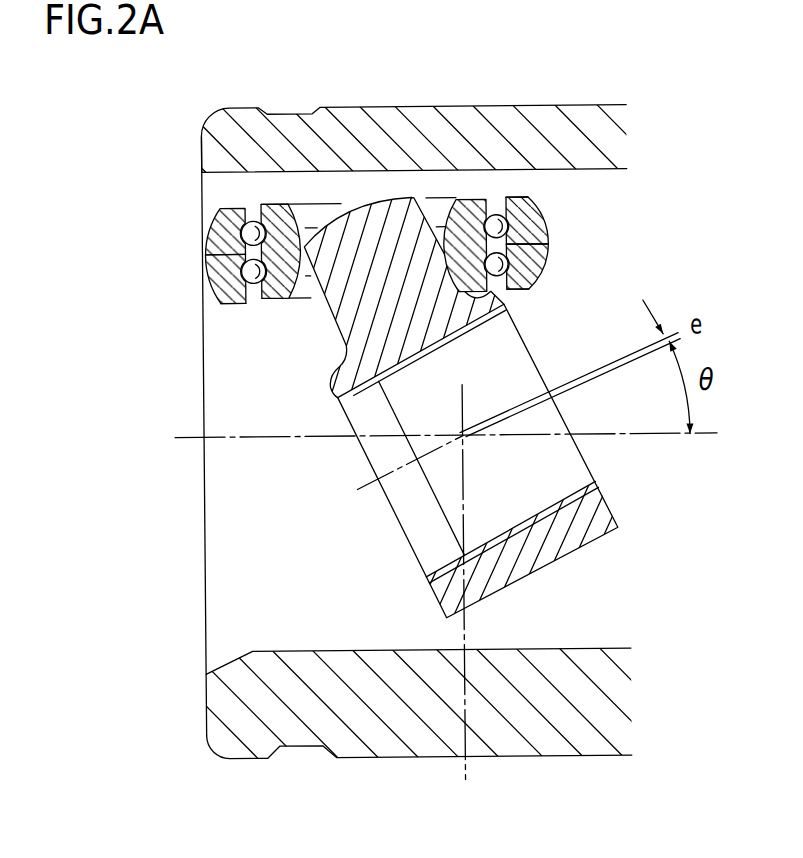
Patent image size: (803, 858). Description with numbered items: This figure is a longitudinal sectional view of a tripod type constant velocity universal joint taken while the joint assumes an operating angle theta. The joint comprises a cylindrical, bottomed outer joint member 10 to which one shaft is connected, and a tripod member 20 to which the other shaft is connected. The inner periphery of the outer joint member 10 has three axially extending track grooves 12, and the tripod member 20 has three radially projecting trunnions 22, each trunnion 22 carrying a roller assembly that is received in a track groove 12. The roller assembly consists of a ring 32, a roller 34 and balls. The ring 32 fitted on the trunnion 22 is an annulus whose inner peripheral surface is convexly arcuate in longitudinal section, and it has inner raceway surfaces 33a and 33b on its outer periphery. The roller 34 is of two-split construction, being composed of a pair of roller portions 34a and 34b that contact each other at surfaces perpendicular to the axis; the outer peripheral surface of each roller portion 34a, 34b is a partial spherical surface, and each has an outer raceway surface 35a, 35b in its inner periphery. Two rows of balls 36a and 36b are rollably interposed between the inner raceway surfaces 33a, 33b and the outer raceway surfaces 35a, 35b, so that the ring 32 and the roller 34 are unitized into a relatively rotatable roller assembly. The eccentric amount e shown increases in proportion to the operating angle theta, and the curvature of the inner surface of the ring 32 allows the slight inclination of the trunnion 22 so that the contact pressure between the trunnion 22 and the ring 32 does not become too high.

The outer joint member 10 is at (590, 106).
The track groove 12 is at (206, 190).
The tripod member 20 is at (583, 547).
The trunnion 22 is at (388, 213).
The ring 32 is at (483, 199).
The inner raceway surface 33a is at (238, 271).
The inner raceway surface 33b is at (248, 226).
The roller 34 is at (659, 169).
The roller portion 34a is at (551, 252).
The roller portion 34b is at (551, 213).
The outer raceway surface 35a is at (249, 258).
The outer raceway surface 35b is at (244, 234).
The row of balls 36a is at (522, 296).
The row of balls 36b is at (500, 215).